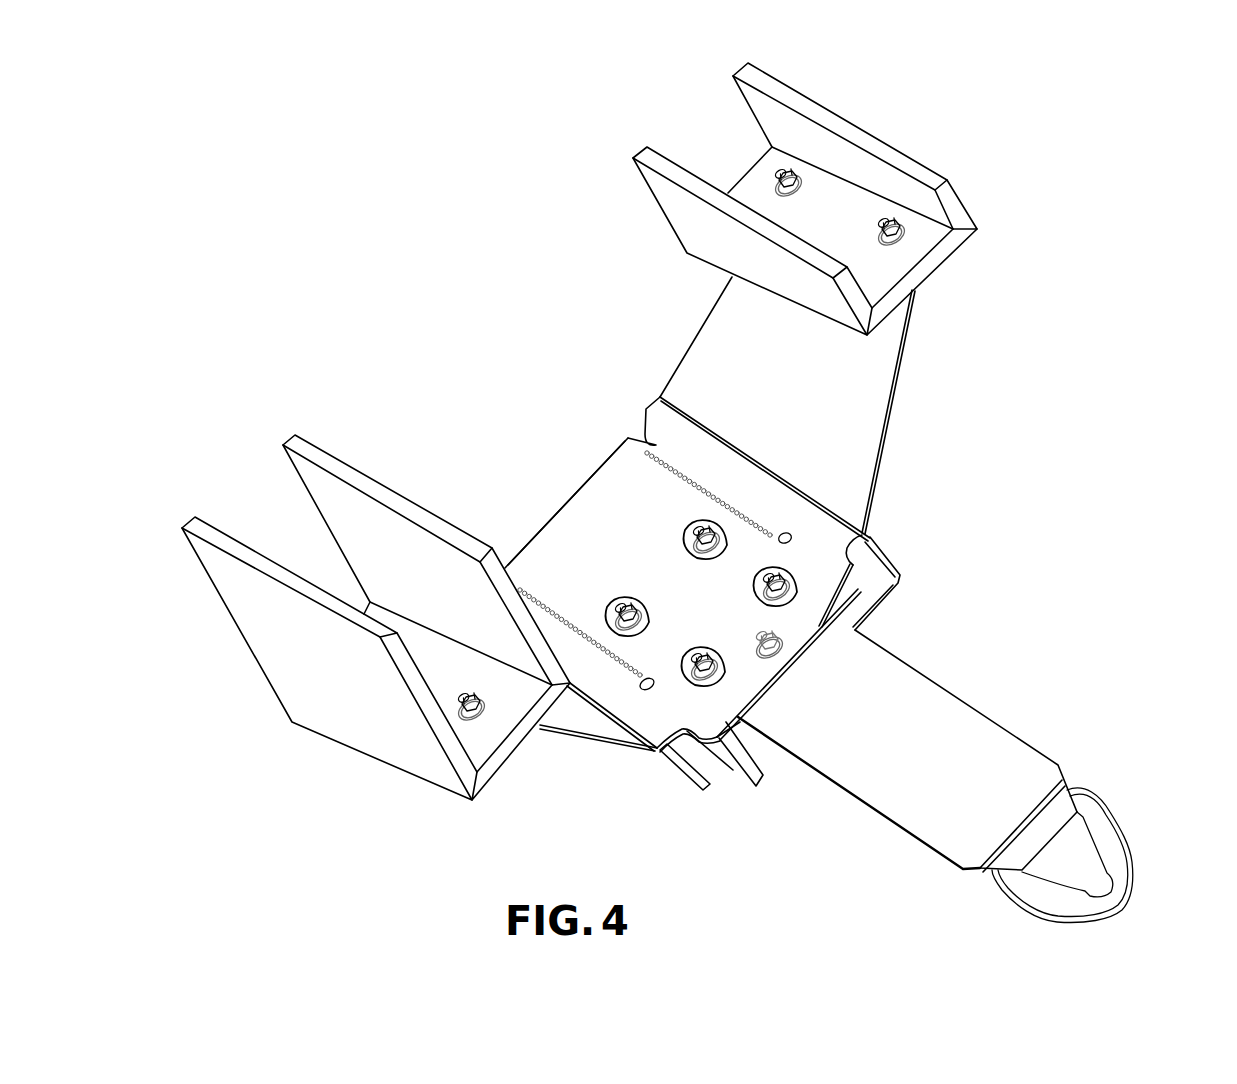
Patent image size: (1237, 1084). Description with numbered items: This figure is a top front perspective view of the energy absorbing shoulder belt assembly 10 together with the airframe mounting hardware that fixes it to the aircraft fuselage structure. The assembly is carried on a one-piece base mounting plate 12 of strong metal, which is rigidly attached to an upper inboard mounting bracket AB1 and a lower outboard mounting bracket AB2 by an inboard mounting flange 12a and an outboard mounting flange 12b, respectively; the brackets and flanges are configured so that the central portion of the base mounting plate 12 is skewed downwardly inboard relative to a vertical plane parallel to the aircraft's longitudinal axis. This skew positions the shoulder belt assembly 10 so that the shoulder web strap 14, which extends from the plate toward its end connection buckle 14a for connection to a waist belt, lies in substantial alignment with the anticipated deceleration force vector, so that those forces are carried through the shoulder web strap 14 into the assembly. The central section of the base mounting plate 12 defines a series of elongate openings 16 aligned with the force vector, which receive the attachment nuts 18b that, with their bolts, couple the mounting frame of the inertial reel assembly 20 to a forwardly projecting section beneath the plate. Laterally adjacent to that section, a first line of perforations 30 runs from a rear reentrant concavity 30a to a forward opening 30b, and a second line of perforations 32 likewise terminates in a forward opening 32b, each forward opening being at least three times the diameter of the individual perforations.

The energy absorbing shoulder belt assembly 10 is at (865, 600).
The base mounting plate 12 is at (765, 549).
The inboard mounting flange 12a is at (808, 371).
The outboard mounting flange 12b is at (573, 720).
The shoulder web strap 14 is at (982, 776).
The end connection buckle 14a is at (1110, 833).
The elongate openings 16 is at (725, 540).
The attachment nuts 18b is at (687, 541).
The inertial reel assembly 20 is at (873, 598).
The perforations 30 is at (688, 460).
The rear reentrant concavity 30a is at (645, 440).
The forward opening 30b is at (791, 534).
The perforations 32 is at (559, 605).
The forward opening 32b is at (650, 689).
The upper inboard mounting bracket AB1 is at (957, 213).
The lower outboard mounting bracket AB2 is at (347, 730).